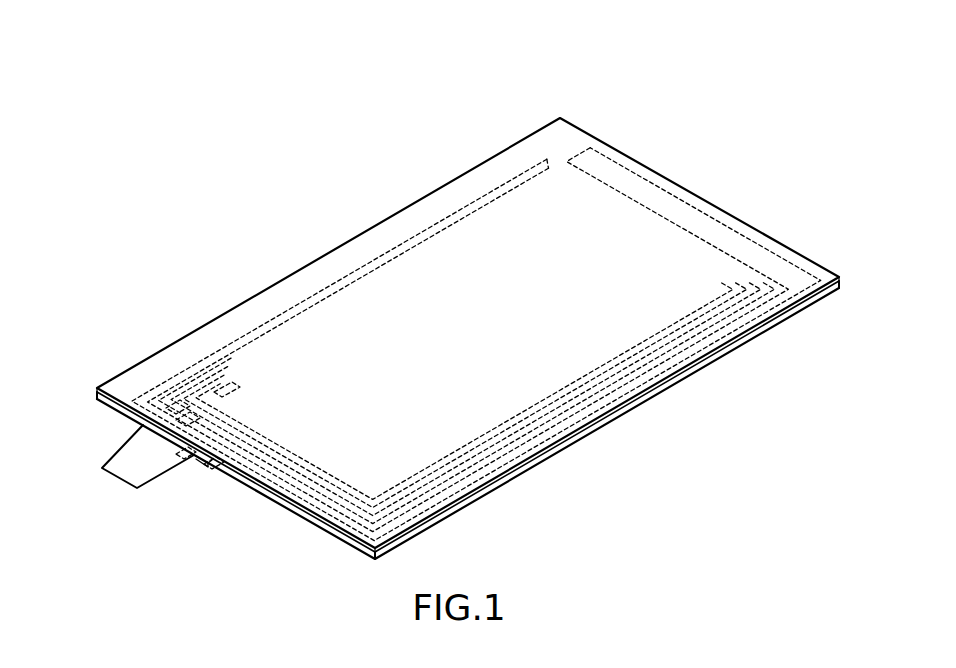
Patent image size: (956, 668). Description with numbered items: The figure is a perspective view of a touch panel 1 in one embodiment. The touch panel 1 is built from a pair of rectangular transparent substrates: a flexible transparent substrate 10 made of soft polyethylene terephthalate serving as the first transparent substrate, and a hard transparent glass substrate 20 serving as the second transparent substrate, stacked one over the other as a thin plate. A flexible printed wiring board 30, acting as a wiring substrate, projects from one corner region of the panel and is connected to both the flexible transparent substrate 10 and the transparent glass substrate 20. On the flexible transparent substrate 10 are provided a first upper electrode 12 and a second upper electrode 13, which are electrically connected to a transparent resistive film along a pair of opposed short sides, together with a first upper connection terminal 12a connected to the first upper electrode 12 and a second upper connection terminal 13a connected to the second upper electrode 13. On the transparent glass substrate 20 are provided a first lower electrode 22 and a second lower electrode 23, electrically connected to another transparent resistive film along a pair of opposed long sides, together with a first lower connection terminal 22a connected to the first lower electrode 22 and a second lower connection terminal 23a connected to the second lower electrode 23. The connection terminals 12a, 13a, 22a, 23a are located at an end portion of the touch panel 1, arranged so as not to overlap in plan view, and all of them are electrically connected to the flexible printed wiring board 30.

The touch panel 1 is at (468, 301).
The flexible transparent substrate 10 is at (832, 272).
The first upper electrode 12 is at (627, 180).
The first upper connection terminal 12a is at (216, 468).
The second upper electrode 13 is at (228, 392).
The second upper connection terminal 13a is at (182, 458).
The transparent glass substrate 20 is at (826, 292).
The first lower electrode 22 is at (418, 237).
The first lower connection terminal 22a is at (178, 412).
The second lower electrode 23 is at (666, 376).
The second lower connection terminal 23a is at (163, 442).
The flexible printed wiring board 30 is at (157, 488).